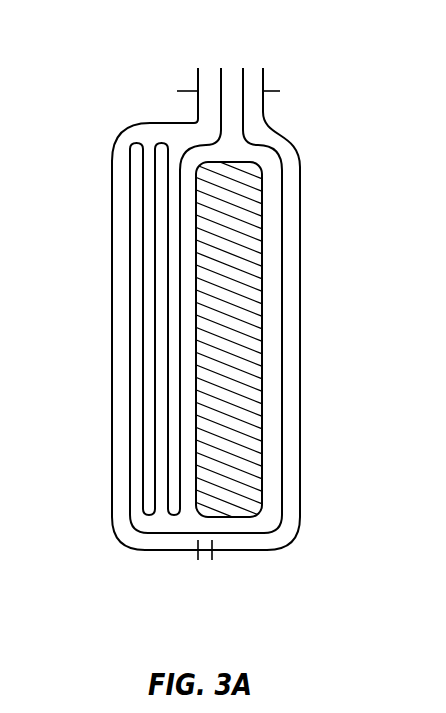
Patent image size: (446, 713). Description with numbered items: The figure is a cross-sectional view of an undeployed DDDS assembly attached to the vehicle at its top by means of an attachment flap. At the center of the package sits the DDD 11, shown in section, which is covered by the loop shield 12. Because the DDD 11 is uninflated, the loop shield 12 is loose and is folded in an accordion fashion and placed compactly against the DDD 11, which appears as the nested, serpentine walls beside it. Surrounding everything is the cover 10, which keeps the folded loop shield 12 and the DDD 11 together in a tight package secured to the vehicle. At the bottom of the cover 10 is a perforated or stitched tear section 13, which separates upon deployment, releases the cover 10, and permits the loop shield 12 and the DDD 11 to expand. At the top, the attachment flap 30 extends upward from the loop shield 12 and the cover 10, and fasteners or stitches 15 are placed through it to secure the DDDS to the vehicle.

The cover 10 is at (112, 152).
The DDD 11 is at (250, 415).
The loop shield 12 is at (282, 252).
The tear section 13 is at (203, 560).
The means for attachment 15 is at (270, 91).
The attachment flap 30 is at (176, 67).